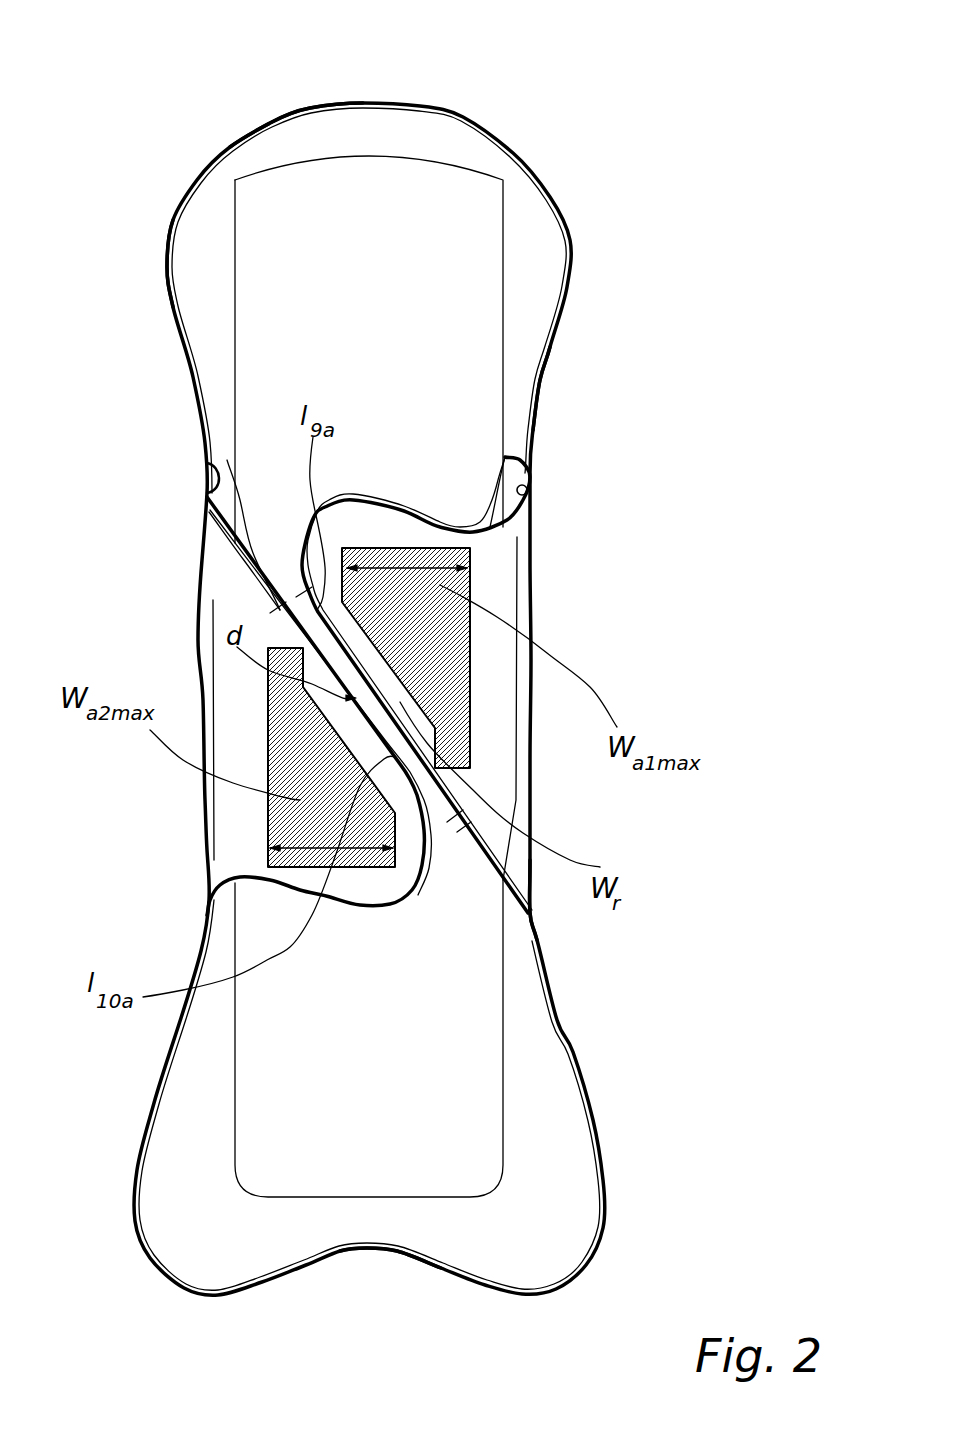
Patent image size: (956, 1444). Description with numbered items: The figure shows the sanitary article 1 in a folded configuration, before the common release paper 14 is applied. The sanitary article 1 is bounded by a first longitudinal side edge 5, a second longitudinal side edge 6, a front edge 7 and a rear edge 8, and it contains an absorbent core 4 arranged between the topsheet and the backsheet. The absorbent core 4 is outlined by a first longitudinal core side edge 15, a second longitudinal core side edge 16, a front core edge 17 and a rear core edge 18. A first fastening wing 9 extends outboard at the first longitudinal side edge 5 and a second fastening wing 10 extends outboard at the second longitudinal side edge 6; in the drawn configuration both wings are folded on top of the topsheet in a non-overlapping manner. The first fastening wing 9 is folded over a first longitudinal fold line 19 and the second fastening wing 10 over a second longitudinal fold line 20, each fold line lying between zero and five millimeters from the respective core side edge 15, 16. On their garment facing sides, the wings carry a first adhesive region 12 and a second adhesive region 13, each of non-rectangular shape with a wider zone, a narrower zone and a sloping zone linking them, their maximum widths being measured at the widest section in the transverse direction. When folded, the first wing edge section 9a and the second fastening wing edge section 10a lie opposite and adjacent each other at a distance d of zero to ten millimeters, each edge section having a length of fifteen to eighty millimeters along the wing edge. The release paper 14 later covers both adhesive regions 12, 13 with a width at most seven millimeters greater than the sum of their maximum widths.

The sanitary article 1 is at (575, 123).
The absorbent core 4 is at (490, 375).
The first longitudinal side edge 5 is at (537, 423).
The second longitudinal side edge 6 is at (165, 298).
The front edge 7 is at (275, 122).
The rear edge 8 is at (415, 1265).
The first fastening wing 9 is at (468, 760).
The first wing edge section 9a is at (356, 664).
The second fastening wing 10 is at (243, 850).
The second fastening wing edge section 10a is at (283, 625).
The first adhesive region 12 is at (447, 643).
The second adhesive region 13 is at (290, 790).
The common release paper 14 is at (523, 920).
The first longitudinal core side edge 15 is at (528, 493).
The second longitudinal core side edge 16 is at (232, 388).
The front core edge 17 is at (415, 157).
The rear core edge 18 is at (330, 1197).
The first longitudinal fold line 19 is at (537, 500).
The second longitudinal fold line 20 is at (210, 463).